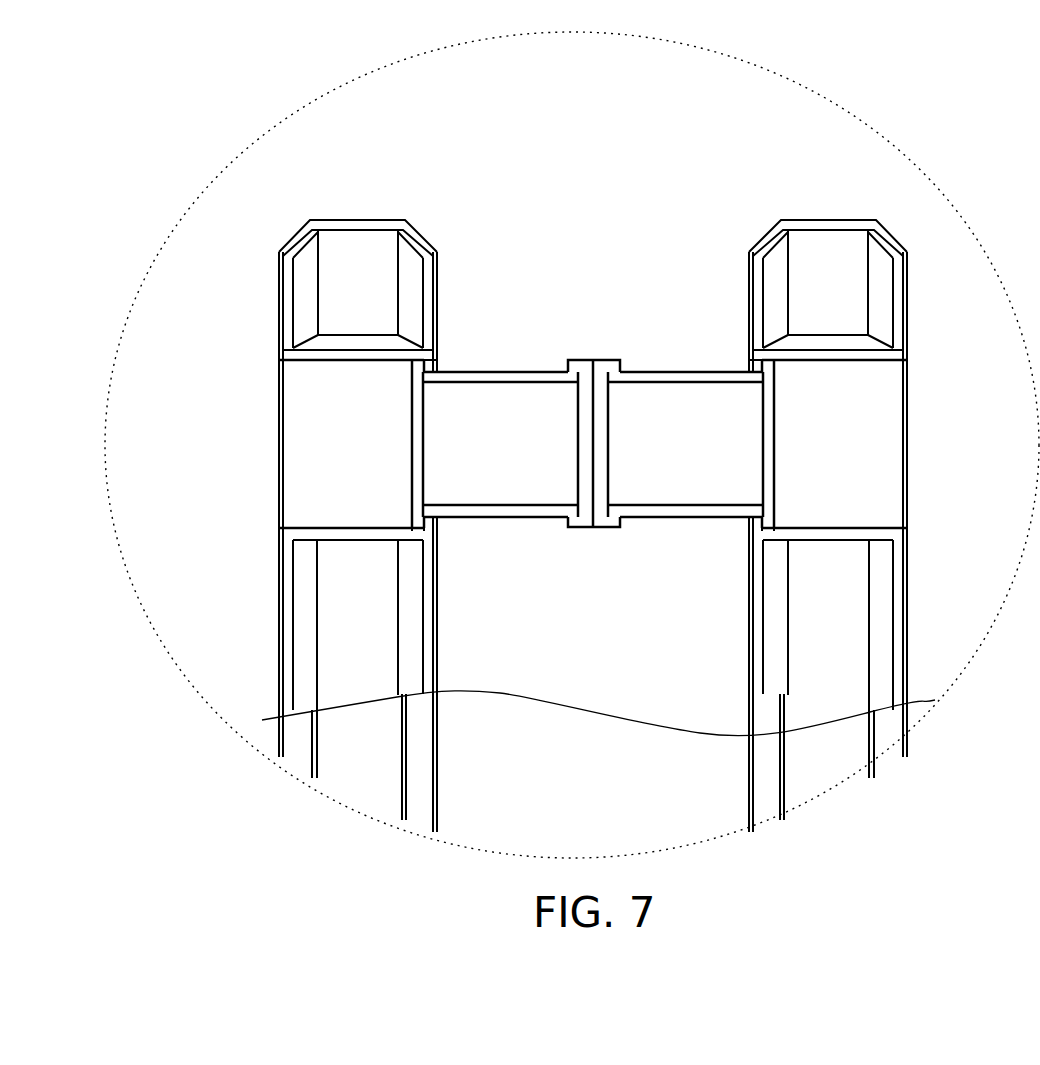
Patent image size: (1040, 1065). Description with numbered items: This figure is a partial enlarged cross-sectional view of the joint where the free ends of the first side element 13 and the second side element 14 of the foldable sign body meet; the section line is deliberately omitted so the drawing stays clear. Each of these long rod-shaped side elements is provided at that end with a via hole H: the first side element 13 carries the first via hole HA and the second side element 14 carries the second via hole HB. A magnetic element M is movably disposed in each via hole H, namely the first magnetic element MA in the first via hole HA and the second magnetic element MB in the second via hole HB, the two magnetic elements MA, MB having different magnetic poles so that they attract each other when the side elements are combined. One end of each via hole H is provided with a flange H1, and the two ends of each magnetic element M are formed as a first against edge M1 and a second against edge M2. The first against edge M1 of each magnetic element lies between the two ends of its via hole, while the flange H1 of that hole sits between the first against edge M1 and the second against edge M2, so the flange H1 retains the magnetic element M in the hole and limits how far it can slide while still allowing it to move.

The first side element 13 is at (829, 219).
The second side element 14 is at (348, 219).
The via hole H is at (593, 444).
The first via hole HA is at (886, 363).
The second via hole HB is at (300, 363).
The flange H1 is at (440, 521).
The magnetic element M is at (593, 394).
The first magnetic element MA is at (673, 378).
The second magnetic element MB is at (489, 378).
The first against edge M1 is at (412, 523).
The second against edge M2 is at (572, 360).